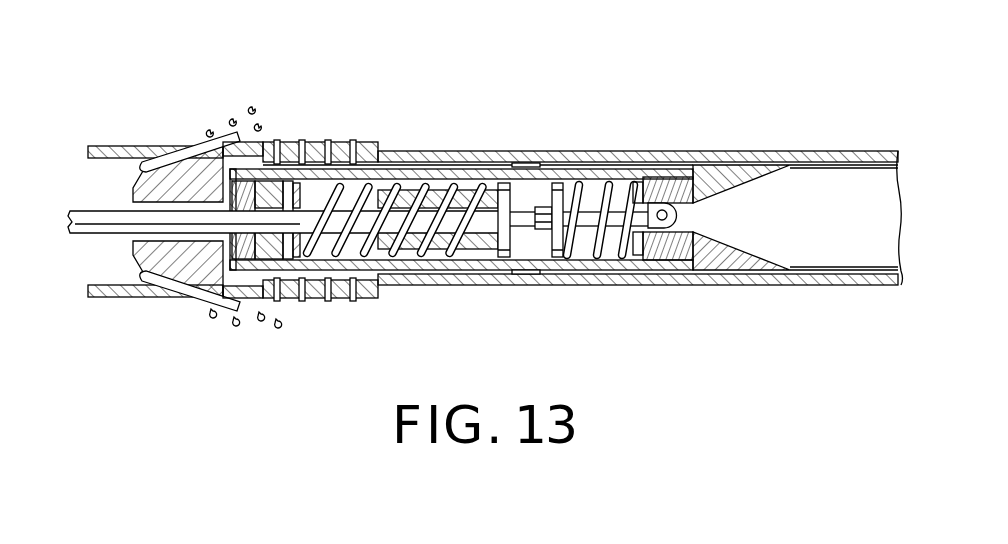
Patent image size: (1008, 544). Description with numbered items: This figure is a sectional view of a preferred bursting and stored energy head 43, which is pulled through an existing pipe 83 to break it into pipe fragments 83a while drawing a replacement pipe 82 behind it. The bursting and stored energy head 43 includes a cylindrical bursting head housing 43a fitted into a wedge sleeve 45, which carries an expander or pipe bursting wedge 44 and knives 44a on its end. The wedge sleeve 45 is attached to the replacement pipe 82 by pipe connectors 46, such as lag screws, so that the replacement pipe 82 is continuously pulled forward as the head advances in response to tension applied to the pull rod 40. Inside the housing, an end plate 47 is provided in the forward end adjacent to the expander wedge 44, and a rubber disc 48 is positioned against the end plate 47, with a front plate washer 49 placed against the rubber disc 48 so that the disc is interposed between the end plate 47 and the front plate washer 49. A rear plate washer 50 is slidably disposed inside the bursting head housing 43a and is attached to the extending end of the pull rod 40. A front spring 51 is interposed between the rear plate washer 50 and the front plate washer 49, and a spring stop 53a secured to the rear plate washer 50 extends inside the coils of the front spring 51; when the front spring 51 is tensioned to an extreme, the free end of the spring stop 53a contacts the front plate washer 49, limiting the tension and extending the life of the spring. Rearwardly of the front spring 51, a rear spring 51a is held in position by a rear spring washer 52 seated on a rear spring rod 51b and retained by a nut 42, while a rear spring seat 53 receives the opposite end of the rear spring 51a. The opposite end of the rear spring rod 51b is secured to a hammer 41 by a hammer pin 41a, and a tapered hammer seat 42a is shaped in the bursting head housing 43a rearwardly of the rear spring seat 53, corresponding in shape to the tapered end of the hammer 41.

The pull rod 40 is at (78, 211).
The hammer 41 is at (866, 217).
The hammer pin 41a is at (668, 214).
The nut 42 is at (540, 228).
The tapered hammer seat 42a is at (722, 184).
The bursting and stored energy head 43 is at (786, 118).
The bursting head housing 43a is at (545, 169).
The expander or pipe bursting wedge 44 is at (168, 180).
The knives 44a is at (136, 168).
The wedge sleeve 45 is at (302, 140).
The pipe connectors 46 is at (328, 141).
The end plate 47 is at (266, 142).
The rubber disc 48 is at (268, 300).
The front plate washer 49 is at (398, 167).
The rear plate washer 50 is at (527, 165).
The front spring 51 is at (432, 169).
The rear spring 51a is at (612, 169).
The rear spring rod 51b is at (708, 151).
The rear spring washer 52 is at (560, 260).
The rear spring seat 53 is at (612, 260).
The spring stop 53a is at (470, 165).
The replacement pipe 82 is at (665, 151).
The pipe 83 is at (107, 146).
The pipe fragments 83a is at (209, 130).